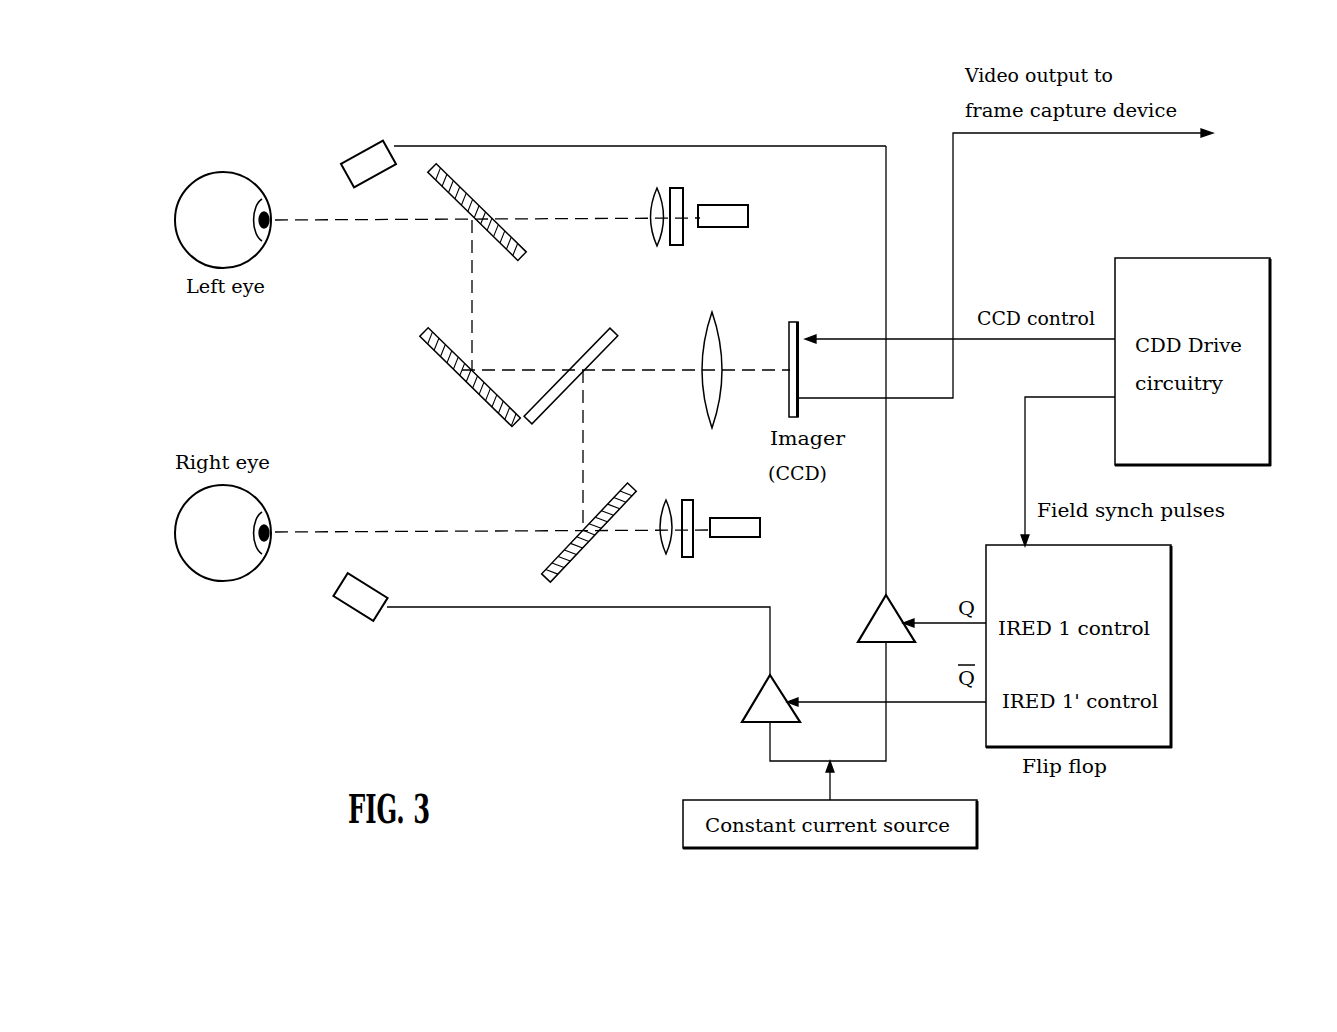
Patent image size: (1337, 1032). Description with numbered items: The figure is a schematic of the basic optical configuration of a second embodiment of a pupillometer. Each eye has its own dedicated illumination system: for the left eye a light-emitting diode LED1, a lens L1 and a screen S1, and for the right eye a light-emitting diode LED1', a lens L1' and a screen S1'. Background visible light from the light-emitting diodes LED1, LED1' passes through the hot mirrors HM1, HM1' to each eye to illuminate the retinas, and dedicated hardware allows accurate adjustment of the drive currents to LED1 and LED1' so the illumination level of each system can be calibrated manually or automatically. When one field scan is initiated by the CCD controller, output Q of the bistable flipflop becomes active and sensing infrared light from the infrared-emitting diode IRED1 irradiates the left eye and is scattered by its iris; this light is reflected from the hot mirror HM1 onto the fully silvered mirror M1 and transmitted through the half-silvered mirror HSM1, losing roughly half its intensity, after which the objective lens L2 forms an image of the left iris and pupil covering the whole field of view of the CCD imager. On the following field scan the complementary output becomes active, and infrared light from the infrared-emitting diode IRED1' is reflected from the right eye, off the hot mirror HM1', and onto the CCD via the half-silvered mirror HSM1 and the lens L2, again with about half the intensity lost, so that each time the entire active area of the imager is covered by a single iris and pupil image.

The infrared-emitting diode IRED1 is at (592, 155).
The hot mirror HM1 is at (479, 212).
The lens L1 is at (649, 203).
The screen S1 is at (679, 203).
The light-emitting diode LED1 is at (749, 200).
The fully silvered mirror M1 is at (455, 377).
The half-silvered mirror HSM1 is at (571, 365).
The objective lens L2 is at (715, 389).
The hot mirror HM1' is at (556, 532).
The lens L1' is at (652, 543).
The screen S1' is at (685, 548).
The light-emitting diode LED1' is at (741, 545).
The infrared-emitting diode IRED1' is at (524, 624).